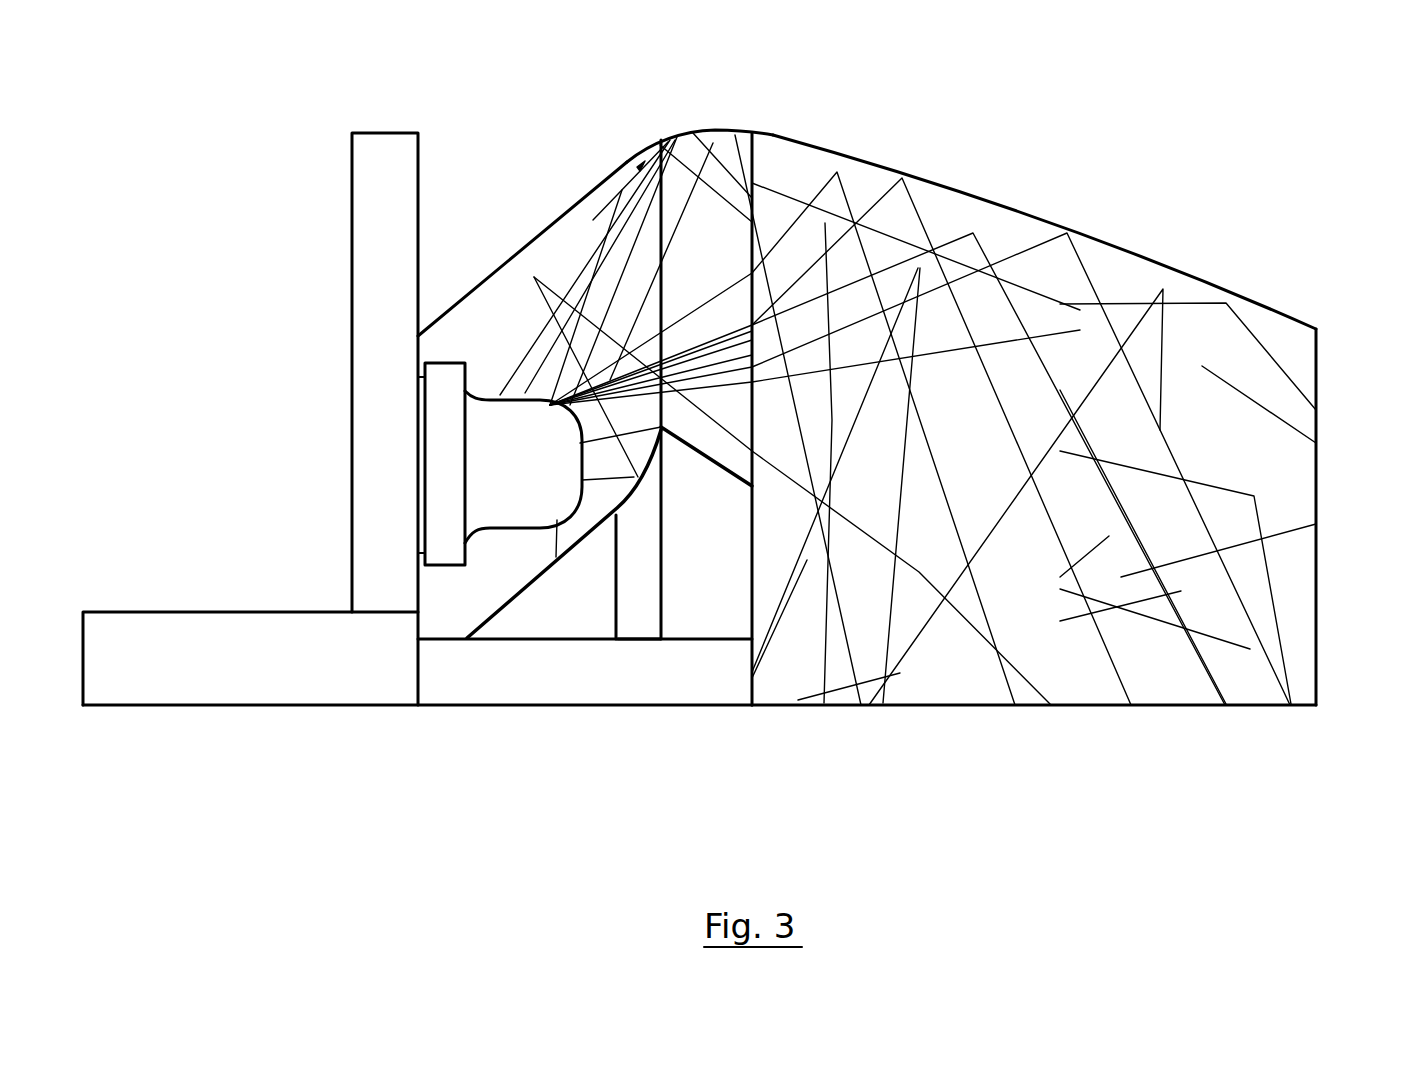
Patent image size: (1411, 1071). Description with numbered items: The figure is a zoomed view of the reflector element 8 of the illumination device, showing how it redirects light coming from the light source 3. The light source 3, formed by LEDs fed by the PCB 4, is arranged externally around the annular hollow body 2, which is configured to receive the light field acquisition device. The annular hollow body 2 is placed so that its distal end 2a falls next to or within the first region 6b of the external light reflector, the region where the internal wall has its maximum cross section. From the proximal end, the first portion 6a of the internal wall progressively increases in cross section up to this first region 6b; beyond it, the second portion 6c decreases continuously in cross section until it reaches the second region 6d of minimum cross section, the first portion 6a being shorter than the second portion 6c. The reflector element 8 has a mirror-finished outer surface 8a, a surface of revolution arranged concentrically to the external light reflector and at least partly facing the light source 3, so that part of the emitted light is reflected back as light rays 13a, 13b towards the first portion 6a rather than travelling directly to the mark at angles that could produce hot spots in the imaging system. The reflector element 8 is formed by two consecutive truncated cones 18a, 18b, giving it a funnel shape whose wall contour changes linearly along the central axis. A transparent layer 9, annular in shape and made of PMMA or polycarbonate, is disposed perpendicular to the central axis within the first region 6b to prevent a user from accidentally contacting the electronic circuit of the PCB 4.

The annular hollow body 2 is at (272, 665).
The distal end of the annular hollow body 2a is at (752, 657).
The light source 3 is at (495, 451).
The PCB 4 is at (380, 222).
The first portion of the internal wall 6a is at (555, 220).
The first region with maximum cross section 6b is at (718, 130).
The second portion of the internal wall 6c is at (873, 165).
The second region with minimum cross section 6d is at (1316, 329).
The reflector element 8 is at (737, 503).
The outer surface of the reflector element 8a is at (520, 594).
The transparent layer 9 is at (737, 420).
The light ray 13a is at (599, 481).
The light ray 13b is at (605, 432).
The truncated cone 18a is at (597, 607).
The truncated cone 18b is at (640, 612).